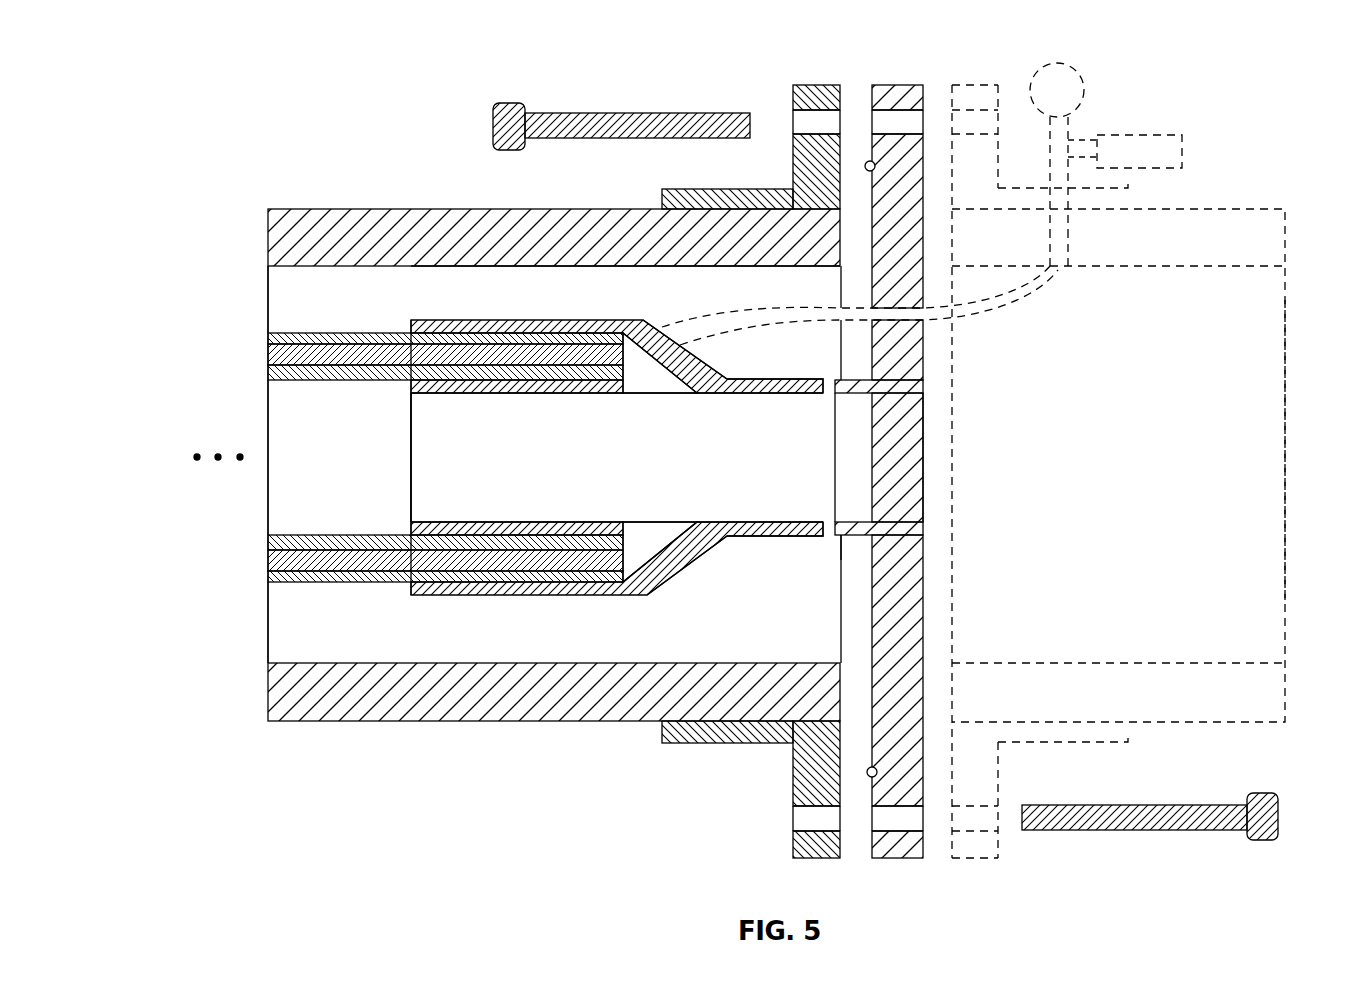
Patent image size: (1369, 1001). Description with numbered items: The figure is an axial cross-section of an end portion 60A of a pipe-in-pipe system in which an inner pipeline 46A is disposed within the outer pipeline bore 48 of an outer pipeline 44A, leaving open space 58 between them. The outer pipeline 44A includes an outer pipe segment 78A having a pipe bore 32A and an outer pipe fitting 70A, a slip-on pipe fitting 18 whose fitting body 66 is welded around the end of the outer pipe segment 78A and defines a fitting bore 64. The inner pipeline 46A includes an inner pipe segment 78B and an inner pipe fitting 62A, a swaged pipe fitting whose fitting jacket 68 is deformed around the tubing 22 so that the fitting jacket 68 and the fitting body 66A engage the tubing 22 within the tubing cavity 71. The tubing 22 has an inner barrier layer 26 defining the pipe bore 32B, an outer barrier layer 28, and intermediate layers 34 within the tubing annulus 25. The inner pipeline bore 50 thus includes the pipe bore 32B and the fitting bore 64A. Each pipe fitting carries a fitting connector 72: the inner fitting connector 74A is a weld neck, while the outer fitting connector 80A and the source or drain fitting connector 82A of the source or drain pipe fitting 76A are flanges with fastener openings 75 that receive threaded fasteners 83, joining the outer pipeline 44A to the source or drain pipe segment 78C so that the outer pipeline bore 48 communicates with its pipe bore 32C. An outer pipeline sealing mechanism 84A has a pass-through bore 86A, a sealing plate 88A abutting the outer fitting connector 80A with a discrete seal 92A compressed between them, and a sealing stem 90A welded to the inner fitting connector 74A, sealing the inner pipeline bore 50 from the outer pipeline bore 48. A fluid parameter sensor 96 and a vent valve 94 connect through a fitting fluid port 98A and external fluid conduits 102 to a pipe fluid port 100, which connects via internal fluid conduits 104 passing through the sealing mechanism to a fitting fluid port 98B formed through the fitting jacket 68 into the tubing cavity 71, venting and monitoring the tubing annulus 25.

The end portion of a pipe-in-pipe system 60A is at (262, 118).
The outer pipeline 44A is at (497, 182).
The fitting bore 64 is at (732, 257).
The outer pipe segment 78A is at (372, 209).
The open space 58 is at (283, 278).
The inner pipeline 46A is at (388, 315).
The tubing 22 is at (268, 560).
The outer barrier layer 28 is at (265, 338).
The inner pipe segment 78B is at (302, 333).
The tubing annulus 25 is at (250, 348).
The intermediate layers 34 is at (330, 352).
The inner barrier layer 26 is at (265, 378).
The pipe bore 32B is at (373, 475).
The inner pipeline bore 50 is at (339, 457).
The fitting bore 64A is at (640, 485).
The outer pipeline bore 48 is at (581, 308).
The pipe bore 32A is at (617, 491).
The fitting body 66A is at (478, 395).
The fitting jacket 68 is at (495, 597).
The tubing cavity 71 is at (645, 370).
The fitting fluid port 98B is at (668, 354).
The pipe fitting 18 is at (913, 471).
The inner pipe fitting 62A is at (665, 578).
The outer pipe fitting 70A is at (780, 748).
The fitting body 66 is at (712, 189).
The source or drain pipe fitting 76A is at (1010, 757).
The fitting connector 72 is at (805, 85).
The outer fitting connector 80A is at (816, 471).
The fastener openings 75 is at (803, 120).
The outer pipeline sealing mechanism 84A is at (893, 78).
The sealing plate 88A is at (925, 345).
The pass-through bore 86A is at (906, 470).
The sealing stem 90A is at (852, 550).
The discrete seal 92A is at (866, 166).
The threaded fasteners 83 is at (520, 103).
The source or drain fitting connector 82A is at (975, 85).
The inner fitting connector 74A is at (812, 540).
The internal fluid conduits 104 is at (727, 328).
The source or drain pipe segment 78C is at (1250, 218).
The pipe bore 32C is at (1137, 460).
The fitting fluid port 98A is at (1062, 210).
The pipe fluid port 100 is at (1060, 270).
The fluid parameter sensor 96 is at (1075, 68).
The external fluid conduits 102 is at (1068, 140).
The vent valve 94 is at (1135, 135).